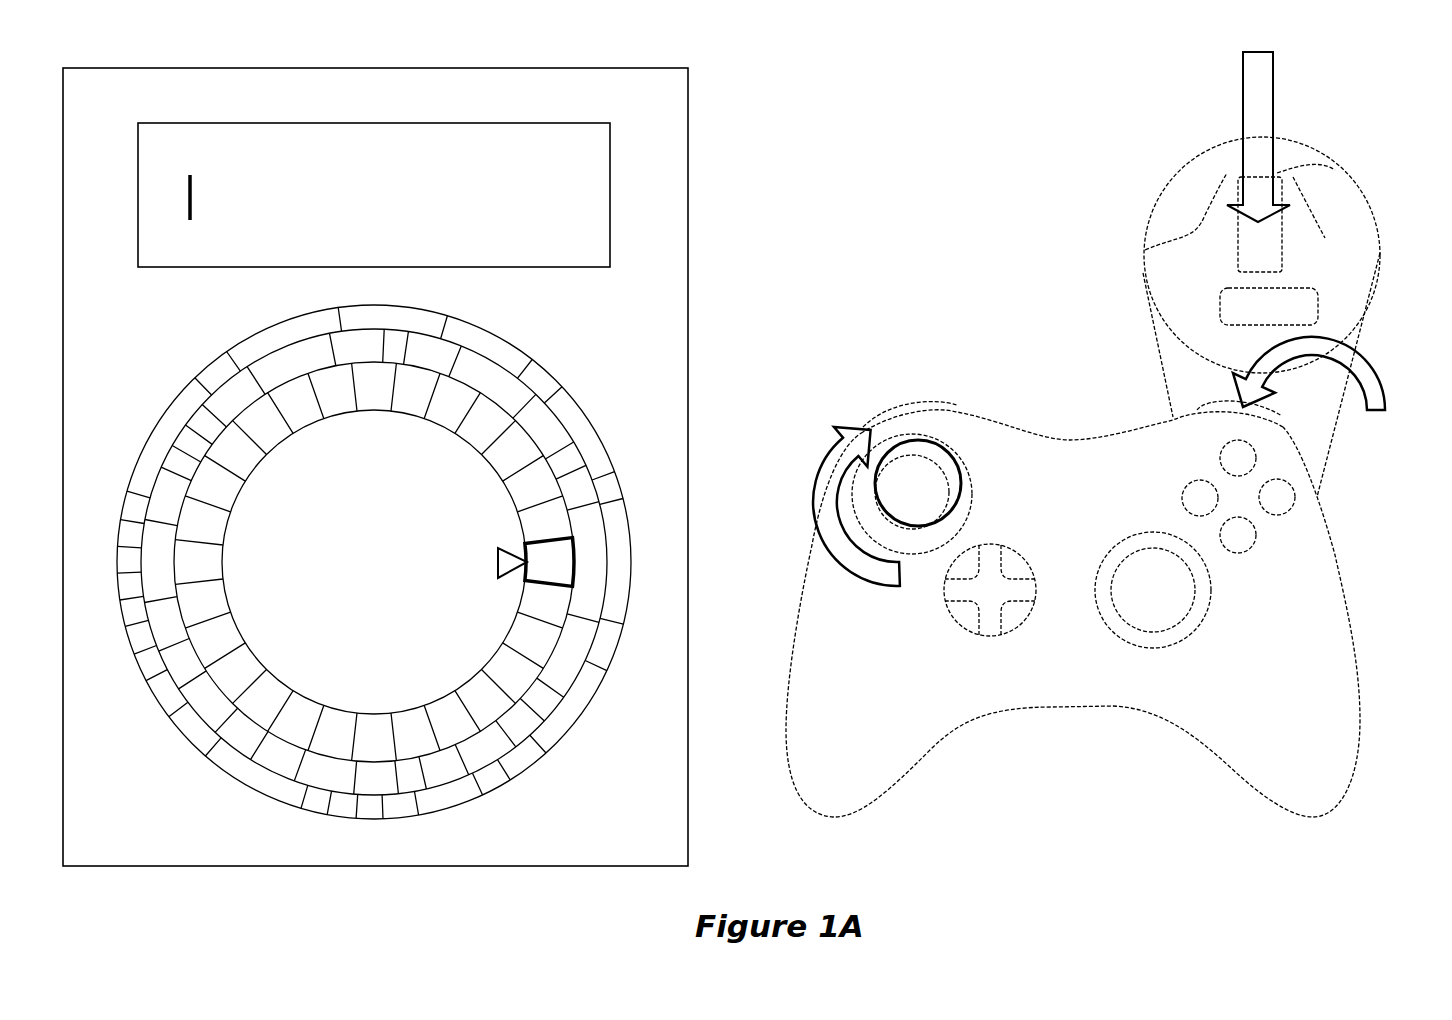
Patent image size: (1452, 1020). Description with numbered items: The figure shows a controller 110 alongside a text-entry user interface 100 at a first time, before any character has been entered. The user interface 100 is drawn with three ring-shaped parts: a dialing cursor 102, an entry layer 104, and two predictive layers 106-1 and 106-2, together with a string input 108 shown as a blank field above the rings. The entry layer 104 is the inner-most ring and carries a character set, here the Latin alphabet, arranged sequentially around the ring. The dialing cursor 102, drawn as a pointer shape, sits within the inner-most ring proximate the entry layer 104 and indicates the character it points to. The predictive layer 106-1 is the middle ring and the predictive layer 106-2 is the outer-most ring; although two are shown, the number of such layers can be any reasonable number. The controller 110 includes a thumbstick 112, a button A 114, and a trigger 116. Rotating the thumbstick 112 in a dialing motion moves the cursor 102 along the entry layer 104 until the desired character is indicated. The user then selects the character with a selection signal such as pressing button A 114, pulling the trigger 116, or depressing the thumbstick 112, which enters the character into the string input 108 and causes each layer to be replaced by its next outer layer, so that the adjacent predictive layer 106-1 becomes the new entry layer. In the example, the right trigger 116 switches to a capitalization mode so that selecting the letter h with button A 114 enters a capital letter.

The user interface 100 is at (668, 108).
The dialing cursor 102 is at (497, 562).
The entry layer 104 is at (371, 411).
The predictive layer 106-1 is at (535, 425).
The predictive layer 106-2 is at (527, 352).
The string input 108 is at (222, 205).
The controller 110 is at (987, 425).
The thumbstick 112 is at (940, 456).
The button A 114 is at (1237, 553).
The trigger 116 is at (1182, 498).